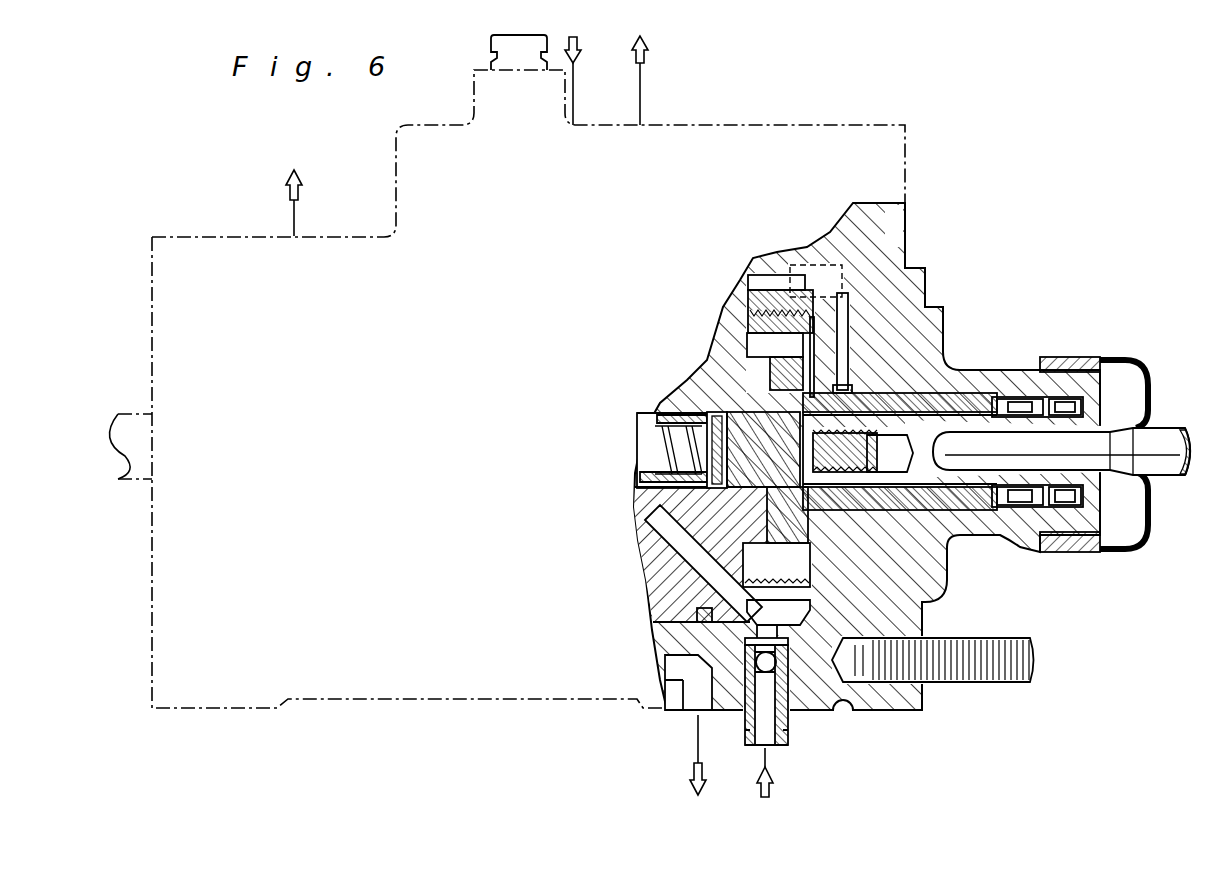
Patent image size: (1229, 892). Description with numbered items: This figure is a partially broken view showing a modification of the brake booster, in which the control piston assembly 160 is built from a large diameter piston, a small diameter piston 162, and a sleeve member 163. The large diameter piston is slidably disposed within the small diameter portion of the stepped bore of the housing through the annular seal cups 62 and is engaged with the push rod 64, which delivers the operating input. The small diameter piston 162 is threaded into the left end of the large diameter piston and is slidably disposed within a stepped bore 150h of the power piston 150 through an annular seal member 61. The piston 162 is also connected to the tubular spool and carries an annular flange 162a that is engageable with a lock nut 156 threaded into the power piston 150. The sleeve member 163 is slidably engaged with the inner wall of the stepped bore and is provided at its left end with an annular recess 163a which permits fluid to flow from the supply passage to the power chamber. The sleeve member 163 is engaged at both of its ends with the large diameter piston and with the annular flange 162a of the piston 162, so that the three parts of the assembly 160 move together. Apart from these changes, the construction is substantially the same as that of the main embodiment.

The power piston 150 is at (643, 570).
The stepped bore 150h is at (707, 410).
The annular seal member 61 is at (742, 410).
The small diameter piston 162 is at (760, 490).
The annular flange 162a is at (813, 510).
The sleeve member 163 is at (965, 395).
The annular recess 163a is at (835, 390).
The annular seal cups 62 is at (1078, 397).
The push rod 64 is at (1172, 433).
The control piston assembly 160 is at (980, 502).
The lock nut 156 is at (813, 578).